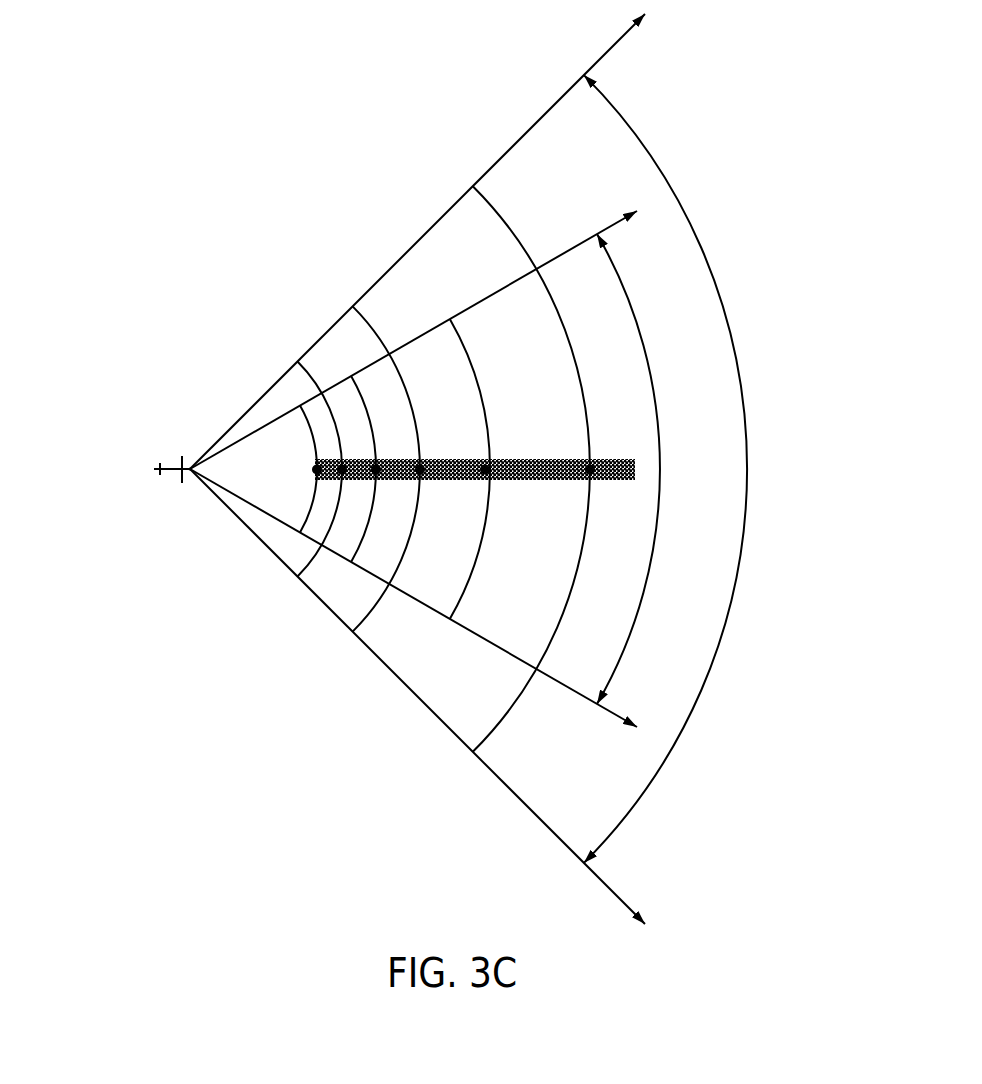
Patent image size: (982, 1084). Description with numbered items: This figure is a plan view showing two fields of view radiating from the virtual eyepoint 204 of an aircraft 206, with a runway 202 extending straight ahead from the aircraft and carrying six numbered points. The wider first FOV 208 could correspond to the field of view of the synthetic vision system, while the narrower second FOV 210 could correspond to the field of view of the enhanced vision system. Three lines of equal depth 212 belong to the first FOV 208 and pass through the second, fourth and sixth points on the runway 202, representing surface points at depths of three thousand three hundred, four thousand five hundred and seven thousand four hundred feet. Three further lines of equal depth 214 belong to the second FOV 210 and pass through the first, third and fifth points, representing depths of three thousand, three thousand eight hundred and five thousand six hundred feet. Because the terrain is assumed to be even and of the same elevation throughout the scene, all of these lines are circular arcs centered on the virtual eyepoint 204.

The runway 202 is at (527, 457).
The virtual eyepoint 204 is at (190, 457).
The aircraft 206 is at (106, 469).
The first FOV 208 is at (500, 469).
The second FOV 210 is at (456, 469).
The lines of equal depth 212 is at (470, 749).
The lines of equal depth 214 is at (445, 316).